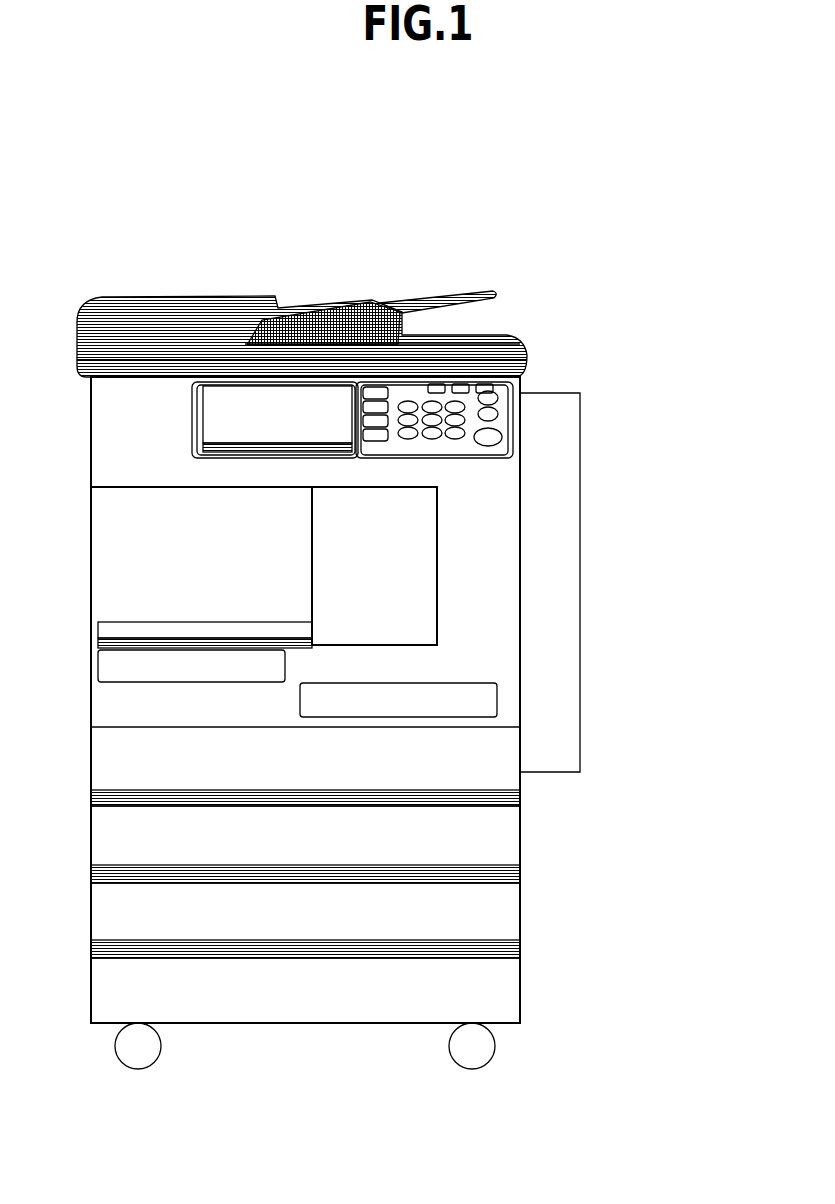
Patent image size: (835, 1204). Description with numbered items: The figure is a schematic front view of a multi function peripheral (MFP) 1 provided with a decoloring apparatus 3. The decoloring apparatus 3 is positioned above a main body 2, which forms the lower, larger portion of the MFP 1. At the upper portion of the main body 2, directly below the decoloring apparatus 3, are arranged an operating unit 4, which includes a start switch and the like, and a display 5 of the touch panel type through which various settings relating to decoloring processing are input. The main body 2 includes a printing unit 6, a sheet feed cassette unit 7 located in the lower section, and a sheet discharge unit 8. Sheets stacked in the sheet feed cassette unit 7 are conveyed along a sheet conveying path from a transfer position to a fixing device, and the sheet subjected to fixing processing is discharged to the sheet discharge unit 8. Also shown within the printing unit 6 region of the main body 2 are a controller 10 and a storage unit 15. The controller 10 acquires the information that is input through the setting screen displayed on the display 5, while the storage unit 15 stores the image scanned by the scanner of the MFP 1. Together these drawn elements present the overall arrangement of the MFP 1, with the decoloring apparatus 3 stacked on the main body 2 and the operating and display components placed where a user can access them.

The multi function peripheral 1 is at (750, 280).
The main body 2 is at (612, 380).
The decoloring apparatus 3 is at (612, 280).
The operating unit 4 is at (432, 460).
The display 5 is at (281, 458).
The printing unit 6 is at (72, 489).
The sheet feed cassette unit 7 is at (78, 807).
The sheet discharge unit 8 is at (170, 622).
The controller 10 is at (140, 683).
The storage unit 15 is at (320, 717).